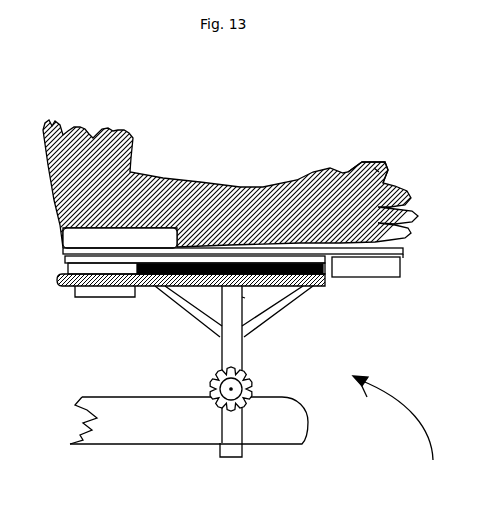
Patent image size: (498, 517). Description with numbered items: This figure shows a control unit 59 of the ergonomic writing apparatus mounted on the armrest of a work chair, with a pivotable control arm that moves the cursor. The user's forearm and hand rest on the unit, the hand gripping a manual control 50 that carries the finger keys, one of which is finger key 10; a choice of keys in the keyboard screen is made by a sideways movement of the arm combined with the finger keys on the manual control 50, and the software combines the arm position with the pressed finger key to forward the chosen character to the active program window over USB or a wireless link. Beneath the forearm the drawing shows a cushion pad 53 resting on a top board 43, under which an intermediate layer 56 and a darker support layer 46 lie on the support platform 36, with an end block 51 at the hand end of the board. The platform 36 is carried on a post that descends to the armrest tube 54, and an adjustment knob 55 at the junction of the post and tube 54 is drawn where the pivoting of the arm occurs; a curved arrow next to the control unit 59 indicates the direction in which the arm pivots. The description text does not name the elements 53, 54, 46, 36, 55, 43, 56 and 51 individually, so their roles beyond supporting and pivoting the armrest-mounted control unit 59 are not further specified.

The finger key 10 is at (366, 165).
The manual control 50 is at (390, 170).
The cushion pad 53 is at (113, 236).
The support rail tube 54 is at (135, 425).
The dark support layer 46 is at (171, 277).
The support platform 36 is at (170, 278).
The adjustment knob sprocket 55 is at (238, 384).
The top board 43 is at (292, 254).
The intermediate layer 56 is at (310, 273).
The end block 51 is at (343, 248).
The control unit 59 is at (399, 429).